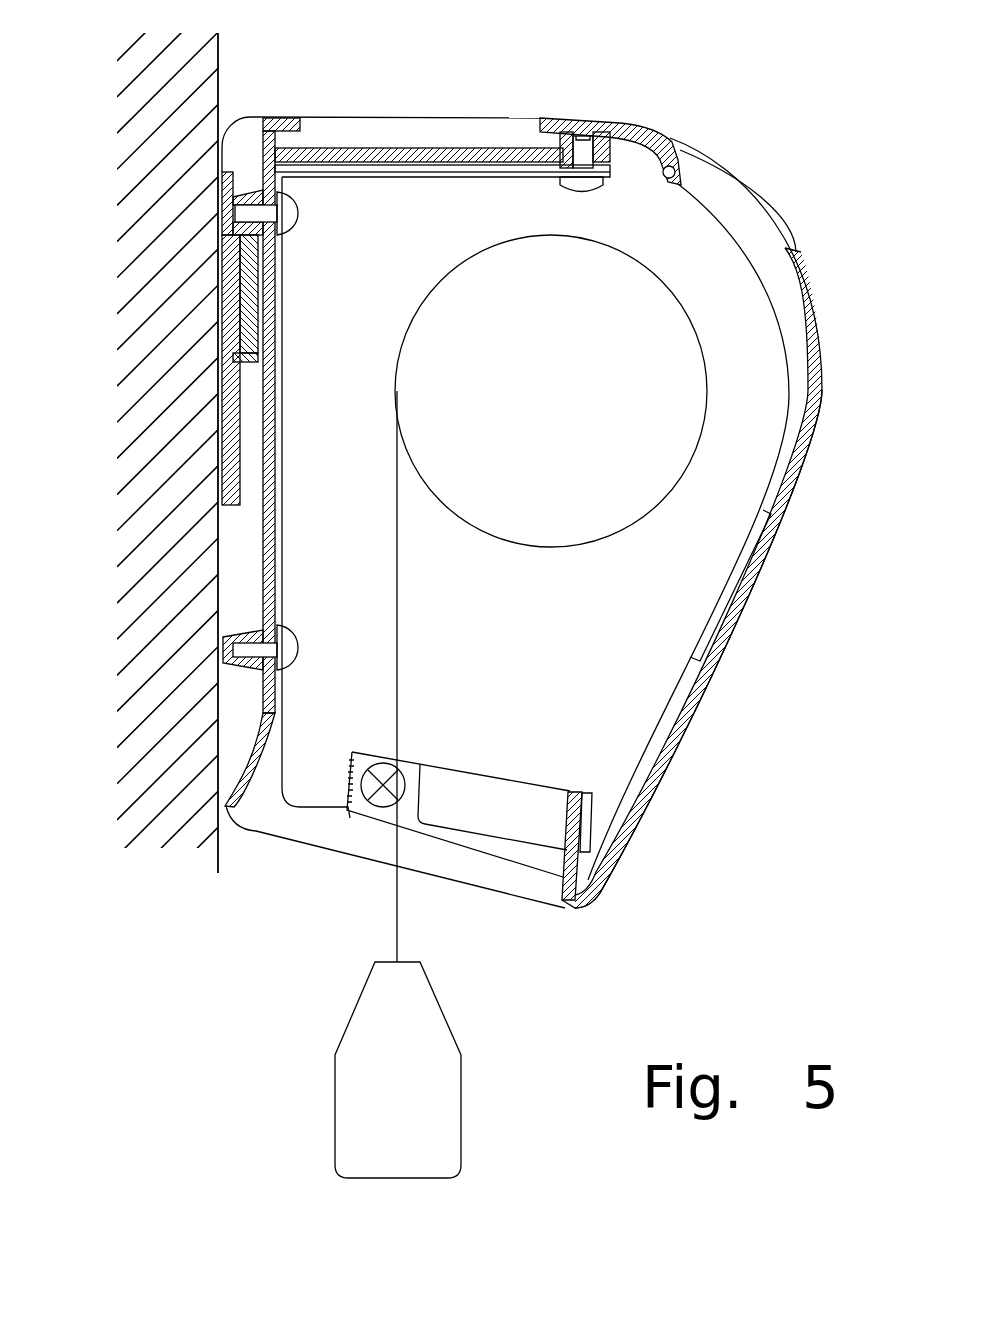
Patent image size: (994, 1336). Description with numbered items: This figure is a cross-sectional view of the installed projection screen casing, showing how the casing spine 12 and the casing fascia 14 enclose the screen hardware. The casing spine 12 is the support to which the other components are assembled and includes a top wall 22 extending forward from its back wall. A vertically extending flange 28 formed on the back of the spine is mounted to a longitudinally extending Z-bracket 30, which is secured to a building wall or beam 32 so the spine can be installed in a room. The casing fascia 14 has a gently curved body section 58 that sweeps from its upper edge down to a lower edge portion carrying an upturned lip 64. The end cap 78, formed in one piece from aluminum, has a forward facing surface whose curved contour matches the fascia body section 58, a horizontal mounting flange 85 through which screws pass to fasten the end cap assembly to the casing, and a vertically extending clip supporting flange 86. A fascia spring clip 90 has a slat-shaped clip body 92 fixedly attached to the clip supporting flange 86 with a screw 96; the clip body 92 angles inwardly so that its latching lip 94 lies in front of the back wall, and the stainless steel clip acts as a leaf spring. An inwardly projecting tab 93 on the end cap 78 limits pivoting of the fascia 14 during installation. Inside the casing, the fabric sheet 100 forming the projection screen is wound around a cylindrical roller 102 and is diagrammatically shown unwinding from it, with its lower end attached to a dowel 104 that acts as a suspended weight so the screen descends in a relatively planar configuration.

The casing spine 12 is at (257, 96).
The casing fascia 14 is at (785, 219).
The top wall 22 is at (348, 131).
The flange 28 is at (228, 270).
The Z-bracket 30 is at (242, 336).
The building wall or beam 32 is at (217, 43).
The body section 58 is at (680, 747).
The upturned lip 64 is at (563, 887).
The end cap 78 is at (645, 652).
The horizontal mounting flange 85 is at (473, 175).
The clip supporting flange 86 is at (377, 850).
The fascia spring clip 90 is at (461, 754).
The clip body 92 is at (533, 783).
The tab 93 is at (753, 542).
The latching lip 94 is at (593, 808).
The screw 96 is at (378, 800).
The fabric sheet 100 is at (400, 684).
The roller 102 is at (610, 515).
The dowel 104 is at (357, 1120).